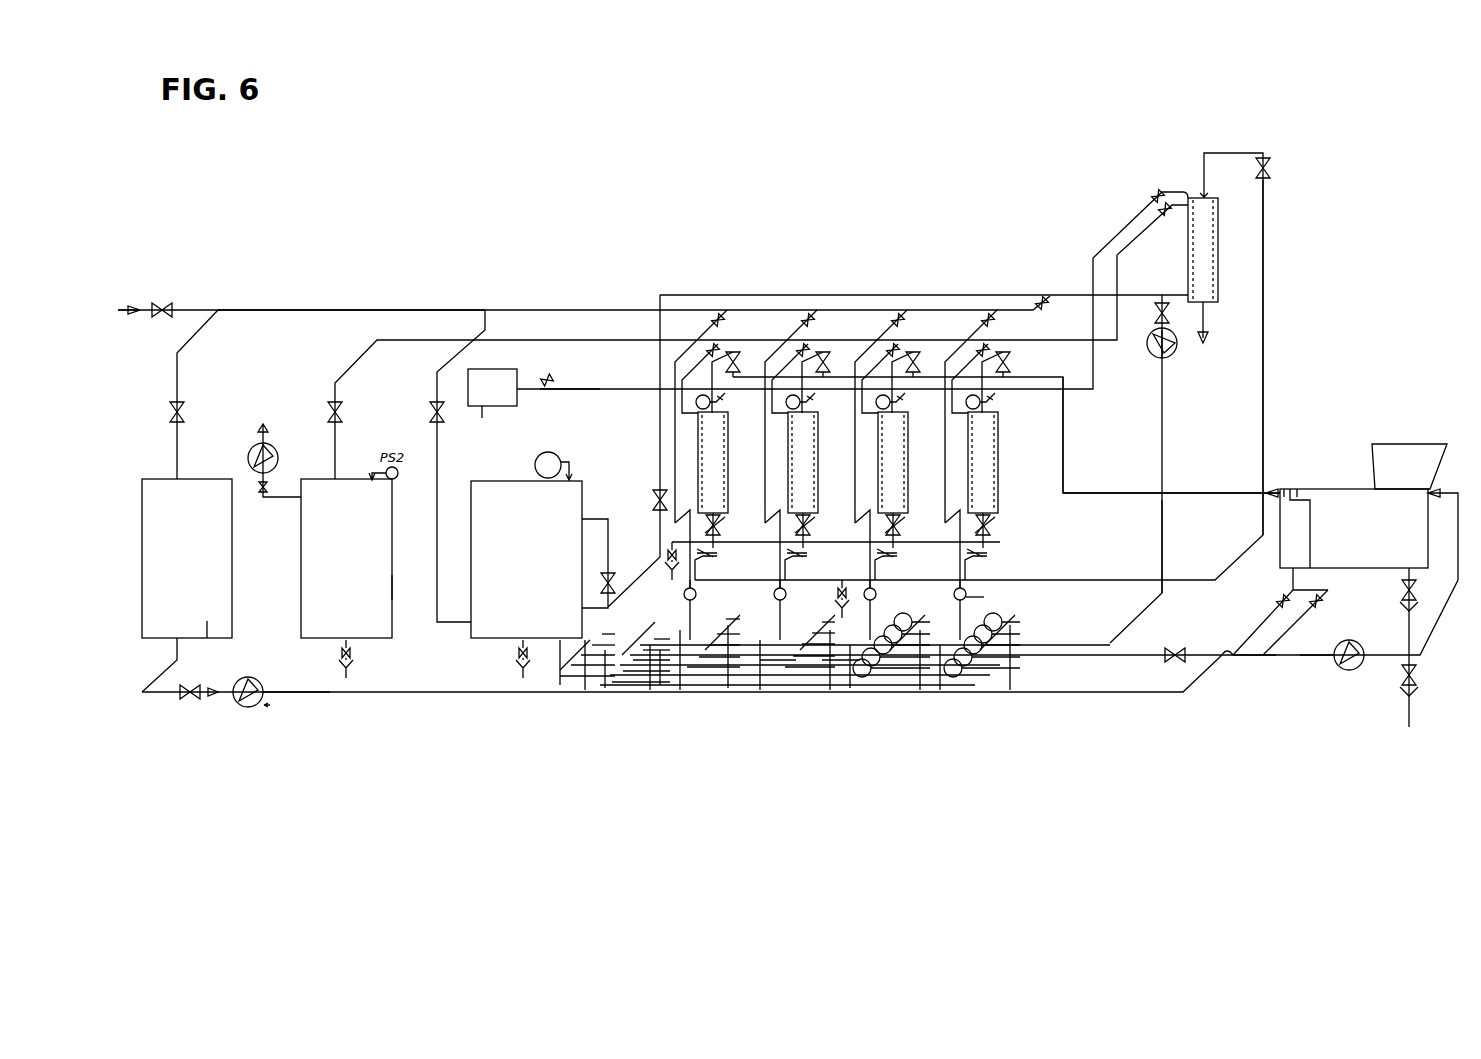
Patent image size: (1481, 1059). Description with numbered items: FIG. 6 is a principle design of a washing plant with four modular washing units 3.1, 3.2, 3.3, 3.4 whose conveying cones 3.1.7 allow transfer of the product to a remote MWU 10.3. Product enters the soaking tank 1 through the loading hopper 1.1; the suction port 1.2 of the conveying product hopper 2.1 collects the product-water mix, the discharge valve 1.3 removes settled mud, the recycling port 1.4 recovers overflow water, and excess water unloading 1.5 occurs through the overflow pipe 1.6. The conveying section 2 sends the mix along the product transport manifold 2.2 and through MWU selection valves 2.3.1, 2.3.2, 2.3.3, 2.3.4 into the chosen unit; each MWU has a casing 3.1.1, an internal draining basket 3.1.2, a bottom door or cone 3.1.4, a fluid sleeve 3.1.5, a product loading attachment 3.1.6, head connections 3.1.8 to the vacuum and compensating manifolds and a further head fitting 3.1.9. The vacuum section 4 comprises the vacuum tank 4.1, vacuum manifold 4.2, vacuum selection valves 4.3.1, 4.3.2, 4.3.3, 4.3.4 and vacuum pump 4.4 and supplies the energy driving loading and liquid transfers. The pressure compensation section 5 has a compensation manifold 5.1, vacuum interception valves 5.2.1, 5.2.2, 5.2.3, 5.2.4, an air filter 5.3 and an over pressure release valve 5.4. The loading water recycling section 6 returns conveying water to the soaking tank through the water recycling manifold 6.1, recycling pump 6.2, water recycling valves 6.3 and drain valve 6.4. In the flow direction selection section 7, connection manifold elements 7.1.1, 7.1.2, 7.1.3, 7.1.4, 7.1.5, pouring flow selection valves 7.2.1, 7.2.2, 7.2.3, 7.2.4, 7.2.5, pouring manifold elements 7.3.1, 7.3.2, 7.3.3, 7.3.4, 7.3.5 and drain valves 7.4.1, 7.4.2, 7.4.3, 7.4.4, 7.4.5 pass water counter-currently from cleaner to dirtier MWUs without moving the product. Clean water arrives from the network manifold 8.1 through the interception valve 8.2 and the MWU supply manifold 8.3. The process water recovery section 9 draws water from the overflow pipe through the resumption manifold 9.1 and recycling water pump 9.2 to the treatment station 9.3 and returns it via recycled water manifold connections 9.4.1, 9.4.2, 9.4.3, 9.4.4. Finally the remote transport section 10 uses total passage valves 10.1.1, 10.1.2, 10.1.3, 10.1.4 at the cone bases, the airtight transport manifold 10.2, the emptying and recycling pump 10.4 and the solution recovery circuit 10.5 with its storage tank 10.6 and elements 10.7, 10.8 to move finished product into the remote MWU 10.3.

The soaking tank 1 is at (1354, 528).
The product loading hopper 1.1 is at (1409, 466).
The suction port 1.2 is at (1300, 491).
The discharge valve 1.3 is at (1414, 594).
The recycling port 1.4 is at (1322, 606).
The excess water unloading 1.5 is at (1272, 605).
The overflow pipe 1.6 is at (1282, 490).
The product conveying and loading section 2 is at (1171, 493).
The conveying product hopper 2.1 is at (1290, 491).
The product transport manifold 2.2 is at (1063, 415).
The MWU selection valve 2.3.1 is at (1004, 350).
The MWU selection valve 2.3.2 is at (914, 350).
The MWU selection valve 2.3.3 is at (824, 350).
The MWU selection valve 2.3.4 is at (734, 350).
The modular washing unit (MWU) 3.1 is at (983, 462).
The modular washing unit (MWU) 3.2 is at (893, 462).
The modular washing unit (MWU) 3.3 is at (803, 462).
The modular washing unit (MWU) 3.4 is at (713, 462).
The casing of the MWU 3.1.1 is at (985, 455).
The MWU internal basket 3.1.2 is at (998, 500).
The unloading door 3.1.4 is at (998, 528).
The fluid sleeve 3.1.5 is at (988, 597).
The product loading manifold attachment 3.1.6 is at (990, 408).
The conveying cone 3.1.7 is at (978, 413).
The vacuum and compensating manifold connections 3.1.8 is at (980, 430).
The reactor top valve 3.1.9 is at (1011, 363).
The vacuum creation section 4 is at (346, 558).
The vacuum tank 4.1 is at (392, 580).
The vacuum manifold 4.2 is at (349, 366).
The vacuum selection valve 4.3.1 is at (983, 348).
The vacuum selection valve 4.3.2 is at (893, 348).
The vacuum selection valve 4.3.3 is at (803, 348).
The vacuum selection valve 4.3.4 is at (713, 348).
The vacuum pump 4.4 is at (275, 448).
The pressure compensation section 5 is at (828, 299).
The compensation manifold 5.1 is at (575, 389).
The vacuum interception valve 5.2.1 is at (990, 395).
The vacuum interception valve 5.2.2 is at (904, 395).
The vacuum interception valve 5.2.3 is at (814, 395).
The vacuum interception valve 5.2.4 is at (724, 395).
The air filter 5.3 is at (482, 425).
The over pressure release valve 5.4 is at (553, 378).
The loading water recycling section 6 is at (1305, 655).
The water recycling manifold 6.1 is at (1258, 660).
The recycling pump 6.2 is at (1352, 665).
The water recycling valves 6.3 is at (1176, 648).
The water recycling manifold drain valve 6.4 is at (1414, 675).
The flow direction selection section 7 is at (810, 660).
The connection manifold 7.1.1 is at (819, 622).
The connection manifold 7.1.2 is at (814, 633).
The connection manifold 7.1.3 is at (809, 644).
The connection manifold 7.1.4 is at (805, 656).
The distributor valve 7.1.5 is at (801, 667).
The pouring flow selection valve 7.2.1 is at (724, 619).
The pouring flow selection valve 7.2.2 is at (719, 634).
The pouring flow selection valve 7.2.3 is at (715, 645).
The pouring flow selection valve 7.2.4 is at (710, 657).
The pouring flow selection valve 7.2.5 is at (704, 667).
The clean water supply and transfer manifold 7.3.1 is at (653, 639).
The pouring manifold 7.3.2 is at (647, 650).
The pouring manifold 7.3.3 is at (642, 660).
The pouring manifold 7.3.4 is at (637, 671).
The distributor valve 7.3.5 is at (632, 682).
The distributor valve 7.4.1 is at (599, 634).
The pouring manifold drain valve 7.4.2 is at (594, 645).
The pouring manifold drain valve 7.4.3 is at (589, 655).
The pouring manifold drain valve 7.4.4 is at (584, 665).
The distributor valve 7.4.5 is at (578, 676).
The network manifold 8.1 is at (148, 308).
The network manifold interception valve 8.2 is at (162, 300).
The MWU supply manifold 8.3 is at (326, 310).
The process water recovery and recycling section 9 is at (187, 501).
The resumption manifold 9.1 is at (360, 693).
The recycling water pump 9.2 is at (250, 697).
The MWU water treatment station 9.3 is at (207, 616).
The recycled water manifold connection 9.4.1 is at (988, 318).
The recycled water manifold connection 9.4.2 is at (898, 318).
The recycled water manifold connection 9.4.3 is at (808, 318).
The recycled water manifold connection 9.4.4 is at (718, 318).
The remote unloading product transport section 10 is at (506, 474).
The total passage valve 10.1.1 is at (720, 546).
The total passage valve 10.1.2 is at (810, 546).
The total passage valve 10.1.3 is at (900, 546).
The total passage valve 10.1.4 is at (990, 546).
The transport manifold 10.2 is at (1263, 345).
The remote MWU 10.3 is at (1199, 270).
The emptying and recycling pump 10.4 is at (1165, 352).
The solution recovery and recycling section 10.5 is at (1162, 515).
The storage tank 10.6 is at (1166, 206).
The process valve 10.7 is at (1156, 193).
The tank valve 10.8 is at (612, 585).